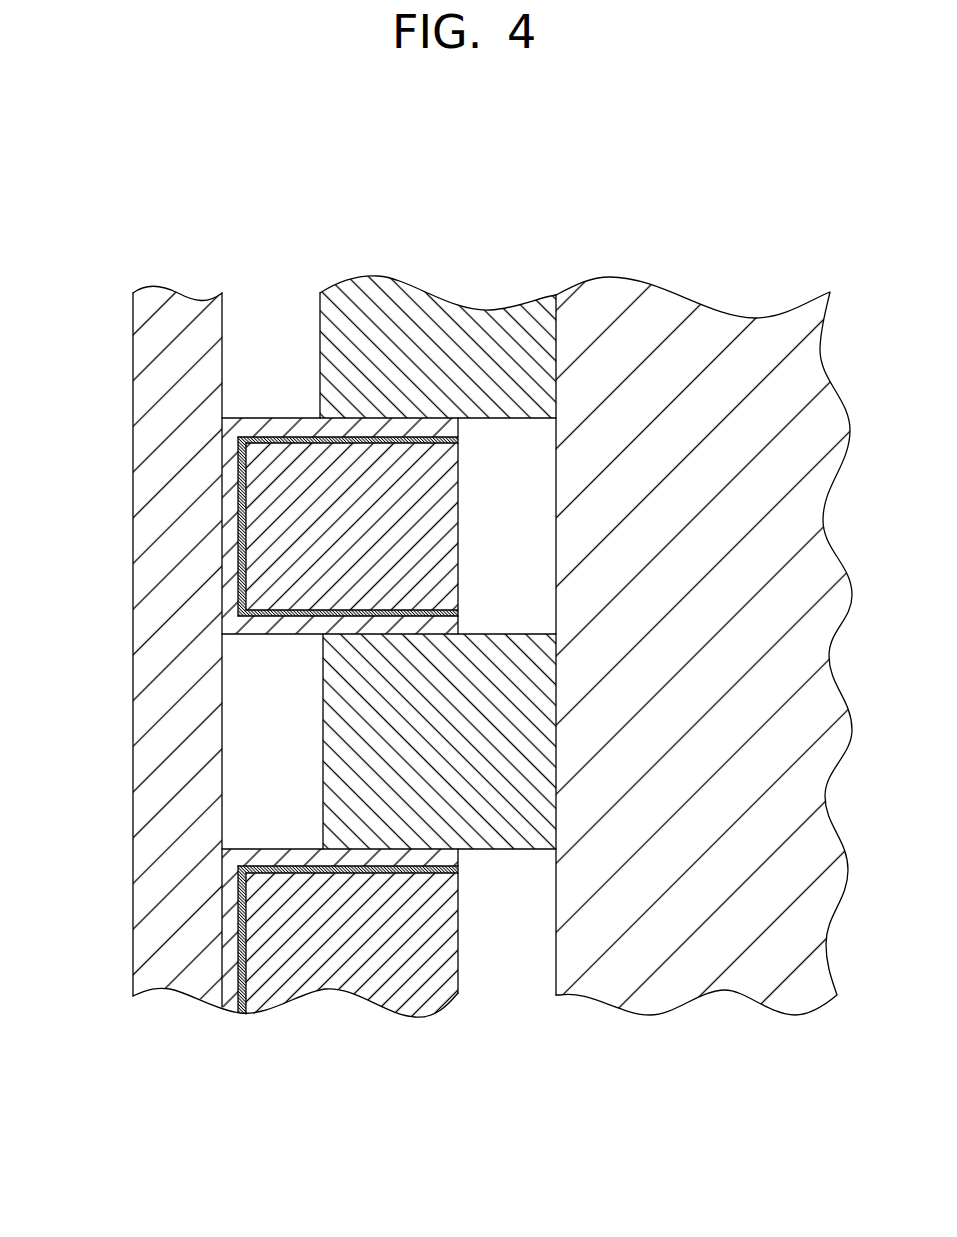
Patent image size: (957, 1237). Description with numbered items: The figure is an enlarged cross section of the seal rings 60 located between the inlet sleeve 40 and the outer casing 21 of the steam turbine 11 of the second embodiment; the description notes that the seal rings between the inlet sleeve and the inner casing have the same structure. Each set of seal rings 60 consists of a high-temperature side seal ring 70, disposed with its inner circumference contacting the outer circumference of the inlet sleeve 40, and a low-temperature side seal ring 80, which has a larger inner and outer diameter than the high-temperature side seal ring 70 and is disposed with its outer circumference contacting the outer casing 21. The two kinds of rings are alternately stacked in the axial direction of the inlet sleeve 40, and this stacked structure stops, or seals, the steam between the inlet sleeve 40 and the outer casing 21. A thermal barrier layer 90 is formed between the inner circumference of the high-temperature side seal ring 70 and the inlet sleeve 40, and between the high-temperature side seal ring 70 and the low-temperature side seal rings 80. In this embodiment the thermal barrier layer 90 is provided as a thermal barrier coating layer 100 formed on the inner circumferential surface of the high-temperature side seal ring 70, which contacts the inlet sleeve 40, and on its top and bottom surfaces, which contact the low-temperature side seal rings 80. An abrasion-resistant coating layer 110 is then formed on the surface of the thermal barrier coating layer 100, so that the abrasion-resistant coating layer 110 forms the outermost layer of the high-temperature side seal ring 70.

The steam turbine 11 is at (776, 193).
The outer casing 21 is at (672, 980).
The inlet sleeve 40 is at (150, 669).
The seal rings 60 is at (292, 1063).
The high-temperature side seal ring 70 is at (441, 512).
The low-temperature side seal ring 80 is at (477, 332).
The thermal barrier layer 90 is at (293, 699).
The thermal barrier coating layer 100 is at (233, 503).
The abrasion-resistant coating layer 110 is at (233, 459).